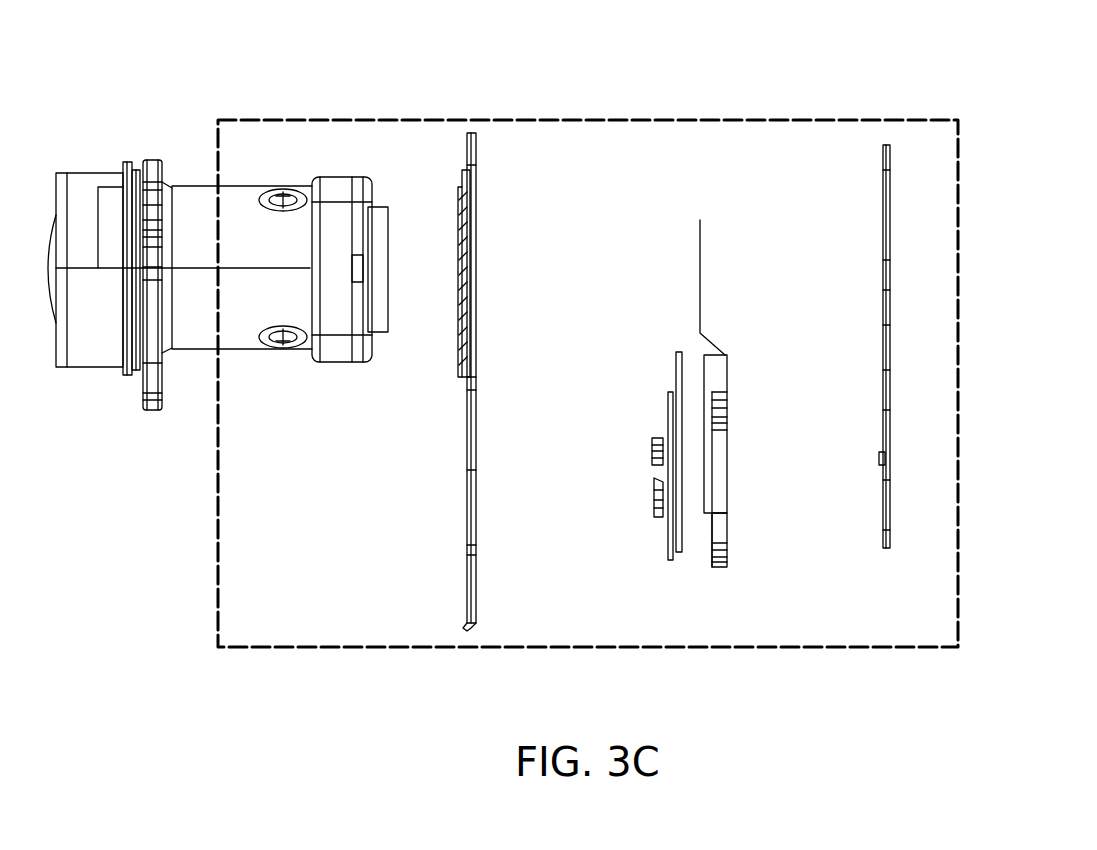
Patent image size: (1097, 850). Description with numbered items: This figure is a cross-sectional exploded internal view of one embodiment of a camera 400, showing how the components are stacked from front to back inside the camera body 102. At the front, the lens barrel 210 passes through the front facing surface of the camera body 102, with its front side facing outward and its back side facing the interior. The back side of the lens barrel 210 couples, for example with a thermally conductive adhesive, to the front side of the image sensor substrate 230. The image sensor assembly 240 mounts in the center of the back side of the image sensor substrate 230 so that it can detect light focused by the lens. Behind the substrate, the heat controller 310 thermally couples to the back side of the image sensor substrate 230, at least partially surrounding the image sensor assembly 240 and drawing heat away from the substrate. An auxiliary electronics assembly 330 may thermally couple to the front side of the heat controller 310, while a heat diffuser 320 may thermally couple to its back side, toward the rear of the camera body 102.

The camera 400 is at (588, 365).
The camera body 102 is at (313, 650).
The lens barrel 210 is at (199, 207).
The image sensor substrate 230 is at (467, 165).
The image sensor assembly 240 is at (477, 257).
The heat controller 310 is at (718, 234).
The heat diffuser 320 is at (885, 535).
The auxiliary electronics assembly 330 is at (663, 517).